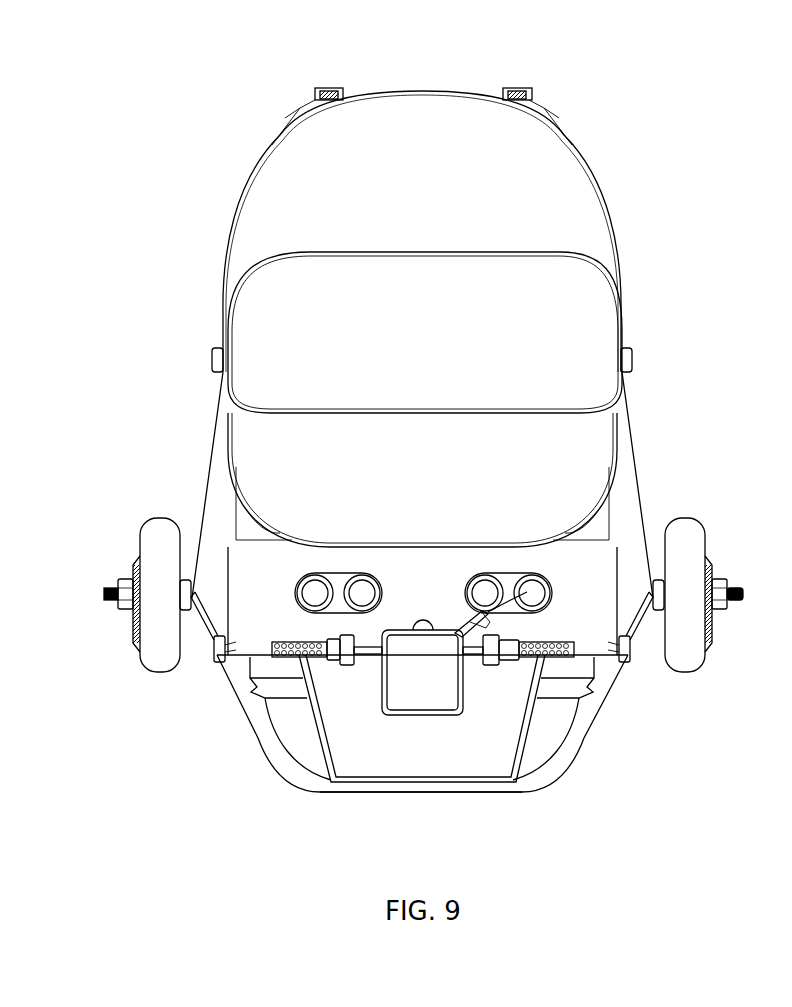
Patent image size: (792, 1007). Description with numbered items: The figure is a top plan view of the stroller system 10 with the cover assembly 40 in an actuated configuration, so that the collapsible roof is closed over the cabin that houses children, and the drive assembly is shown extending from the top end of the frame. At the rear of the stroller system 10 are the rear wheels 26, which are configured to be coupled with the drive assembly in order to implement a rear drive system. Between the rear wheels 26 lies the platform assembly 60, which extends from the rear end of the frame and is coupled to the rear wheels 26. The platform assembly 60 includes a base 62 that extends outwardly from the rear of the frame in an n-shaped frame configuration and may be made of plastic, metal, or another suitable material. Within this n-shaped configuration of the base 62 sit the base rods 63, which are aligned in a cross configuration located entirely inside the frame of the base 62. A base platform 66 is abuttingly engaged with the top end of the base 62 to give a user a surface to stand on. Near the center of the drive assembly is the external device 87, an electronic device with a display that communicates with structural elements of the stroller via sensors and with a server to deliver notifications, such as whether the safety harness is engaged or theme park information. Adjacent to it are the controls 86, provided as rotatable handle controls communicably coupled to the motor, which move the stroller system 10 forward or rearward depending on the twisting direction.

The stroller system 10 is at (155, 51).
The cover assembly 40 is at (595, 160).
The rear wheels 26 is at (165, 535).
The external device 87 is at (397, 628).
The controls 86 is at (547, 642).
The base platform 66 is at (450, 755).
The base rods 63 is at (565, 690).
The platform assembly 60 is at (258, 747).
The base 62 is at (390, 793).